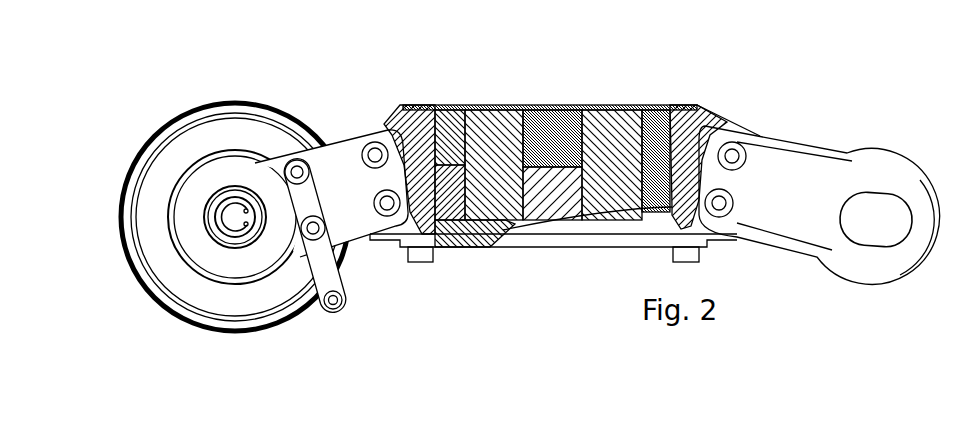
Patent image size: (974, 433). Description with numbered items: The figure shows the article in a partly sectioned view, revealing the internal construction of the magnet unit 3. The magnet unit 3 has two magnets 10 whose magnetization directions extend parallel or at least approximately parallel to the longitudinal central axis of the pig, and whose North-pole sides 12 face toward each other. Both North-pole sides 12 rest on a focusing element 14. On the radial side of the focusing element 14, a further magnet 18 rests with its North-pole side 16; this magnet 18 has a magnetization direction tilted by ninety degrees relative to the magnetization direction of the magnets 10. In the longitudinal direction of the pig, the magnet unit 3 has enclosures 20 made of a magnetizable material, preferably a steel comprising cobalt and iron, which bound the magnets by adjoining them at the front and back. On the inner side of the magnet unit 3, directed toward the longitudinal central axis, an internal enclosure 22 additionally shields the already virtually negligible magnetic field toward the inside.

The magnet unit 3 is at (480, 246).
The magnets 10 is at (483, 105).
The North-pole sides 12 is at (513, 105).
The focusing element 14 is at (562, 105).
The North-pole side 16 is at (547, 205).
The magnet 18 is at (568, 205).
The enclosures 20 is at (433, 105).
The internal enclosure 22 is at (450, 245).